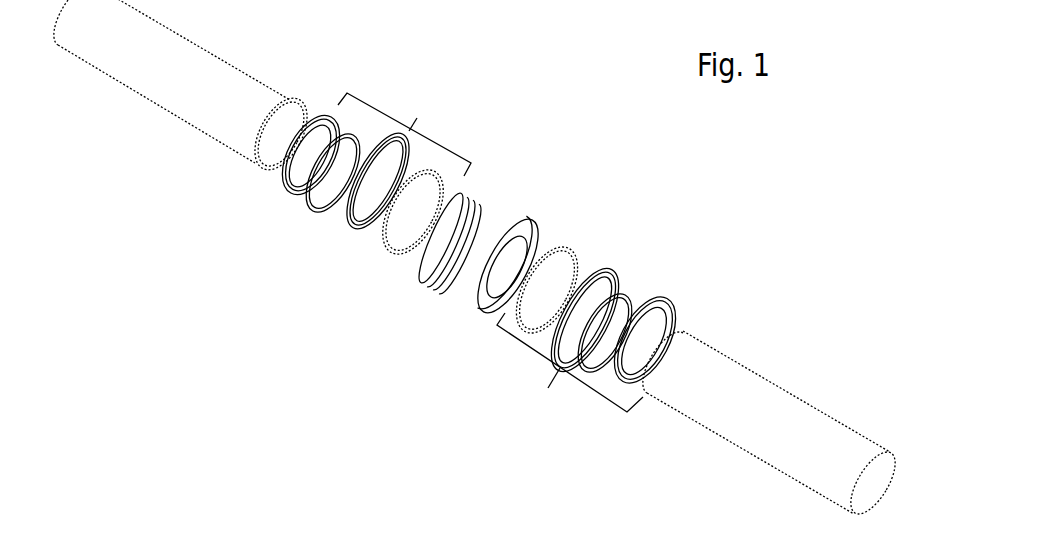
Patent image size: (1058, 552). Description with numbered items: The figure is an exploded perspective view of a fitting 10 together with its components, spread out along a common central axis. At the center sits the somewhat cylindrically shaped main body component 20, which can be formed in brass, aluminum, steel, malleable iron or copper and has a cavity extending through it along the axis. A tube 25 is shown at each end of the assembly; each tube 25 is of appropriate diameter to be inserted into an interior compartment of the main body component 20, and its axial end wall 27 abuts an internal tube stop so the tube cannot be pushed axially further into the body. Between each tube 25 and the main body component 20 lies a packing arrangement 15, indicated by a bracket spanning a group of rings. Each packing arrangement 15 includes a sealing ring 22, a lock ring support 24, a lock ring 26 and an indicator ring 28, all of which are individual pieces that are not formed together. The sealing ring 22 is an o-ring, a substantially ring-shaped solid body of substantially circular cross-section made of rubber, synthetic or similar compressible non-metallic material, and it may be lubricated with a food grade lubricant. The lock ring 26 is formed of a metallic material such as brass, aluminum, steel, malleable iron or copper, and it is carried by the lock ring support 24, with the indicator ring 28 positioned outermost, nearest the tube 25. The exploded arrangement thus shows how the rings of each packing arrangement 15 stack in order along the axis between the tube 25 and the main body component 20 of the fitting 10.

The fitting 10 is at (258, 342).
The packing arrangement 15 is at (490, 256).
The main body component 20 is at (453, 283).
The sealing ring 22 is at (393, 244).
The lock ring support 24 is at (367, 228).
The tube 25 is at (218, 132).
The lock ring 26 is at (327, 210).
The axial end wall 27 is at (305, 101).
The indicator ring 28 is at (298, 193).